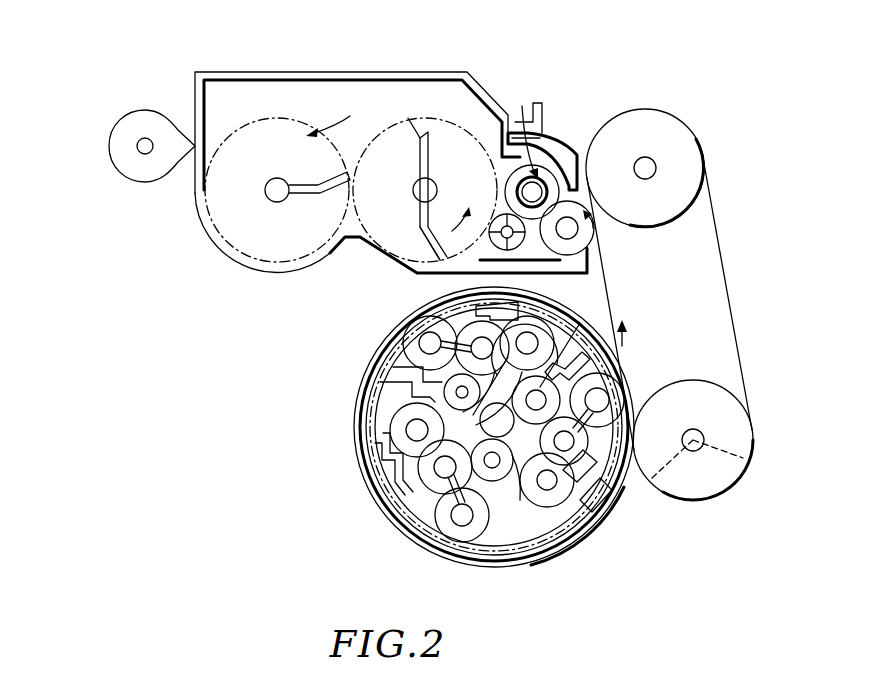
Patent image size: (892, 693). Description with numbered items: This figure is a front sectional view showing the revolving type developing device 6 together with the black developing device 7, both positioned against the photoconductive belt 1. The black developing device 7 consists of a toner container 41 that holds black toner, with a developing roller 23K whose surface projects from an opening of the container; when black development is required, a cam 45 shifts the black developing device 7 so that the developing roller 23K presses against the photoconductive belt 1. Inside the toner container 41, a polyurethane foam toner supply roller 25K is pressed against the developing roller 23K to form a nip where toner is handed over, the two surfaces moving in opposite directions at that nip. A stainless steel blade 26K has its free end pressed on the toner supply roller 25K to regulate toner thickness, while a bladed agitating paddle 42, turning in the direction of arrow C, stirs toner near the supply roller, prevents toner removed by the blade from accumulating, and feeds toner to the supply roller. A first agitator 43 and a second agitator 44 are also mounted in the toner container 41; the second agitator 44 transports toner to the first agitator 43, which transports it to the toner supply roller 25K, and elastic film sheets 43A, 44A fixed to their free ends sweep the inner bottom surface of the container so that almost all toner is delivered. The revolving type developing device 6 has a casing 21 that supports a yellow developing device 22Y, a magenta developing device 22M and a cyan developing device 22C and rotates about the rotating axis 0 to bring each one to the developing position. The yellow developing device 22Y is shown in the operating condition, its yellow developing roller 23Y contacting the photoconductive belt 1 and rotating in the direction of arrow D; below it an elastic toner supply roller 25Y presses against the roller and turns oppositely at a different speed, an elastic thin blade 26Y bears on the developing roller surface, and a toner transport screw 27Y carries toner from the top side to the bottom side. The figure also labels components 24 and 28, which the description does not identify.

The photoconductive belt 1 is at (727, 298).
The revolving type developing device 6 is at (392, 378).
The black developing device 7 is at (220, 250).
The casing 21 is at (520, 447).
The cyan developing device 22C is at (500, 545).
The magenta developing device 22M is at (392, 388).
The yellow developing device 22Y is at (560, 515).
The developing roller 23K is at (590, 240).
The yellow developing roller 23Y is at (618, 378).
The toner supply roller 24 is at (541, 495).
The toner supply roller 25K is at (539, 158).
The toner supply roller 25Y is at (627, 498).
The blade 26K is at (505, 268).
The elastic thin blade 26Y is at (598, 432).
The toner transport screw 27Y is at (583, 312).
The developing unit partition 28 is at (600, 525).
The toner container 41 is at (247, 72).
The agitating paddle 42 is at (492, 225).
The first agitator 43 is at (426, 135).
The elastic film sheet 43A is at (438, 258).
The second agitator 44 is at (302, 180).
The elastic film sheet 44A is at (339, 112).
The cam 45 is at (108, 146).
The rotating axis 0 is at (481, 425).
The arrow C is at (524, 129).
The arrow D is at (618, 403).